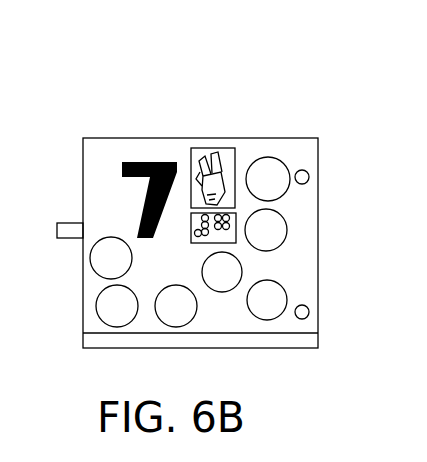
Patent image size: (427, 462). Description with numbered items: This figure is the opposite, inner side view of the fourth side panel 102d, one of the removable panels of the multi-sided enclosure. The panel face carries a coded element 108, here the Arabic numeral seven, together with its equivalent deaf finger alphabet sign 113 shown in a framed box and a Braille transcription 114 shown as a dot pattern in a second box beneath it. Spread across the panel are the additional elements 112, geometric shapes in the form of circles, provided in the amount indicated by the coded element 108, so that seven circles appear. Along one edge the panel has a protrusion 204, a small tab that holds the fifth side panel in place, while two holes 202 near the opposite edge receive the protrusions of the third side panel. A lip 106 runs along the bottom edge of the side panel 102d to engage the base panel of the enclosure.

The fourth side panel 102d is at (306, 60).
The lip 106 is at (317, 337).
The coded element 108 is at (140, 145).
The additional element 112 is at (302, 242).
The deaf finger alphabet sign 113 is at (215, 148).
The Braille transcription 114 is at (190, 241).
The holes 202 is at (309, 177).
The protrusion 204 is at (72, 229).